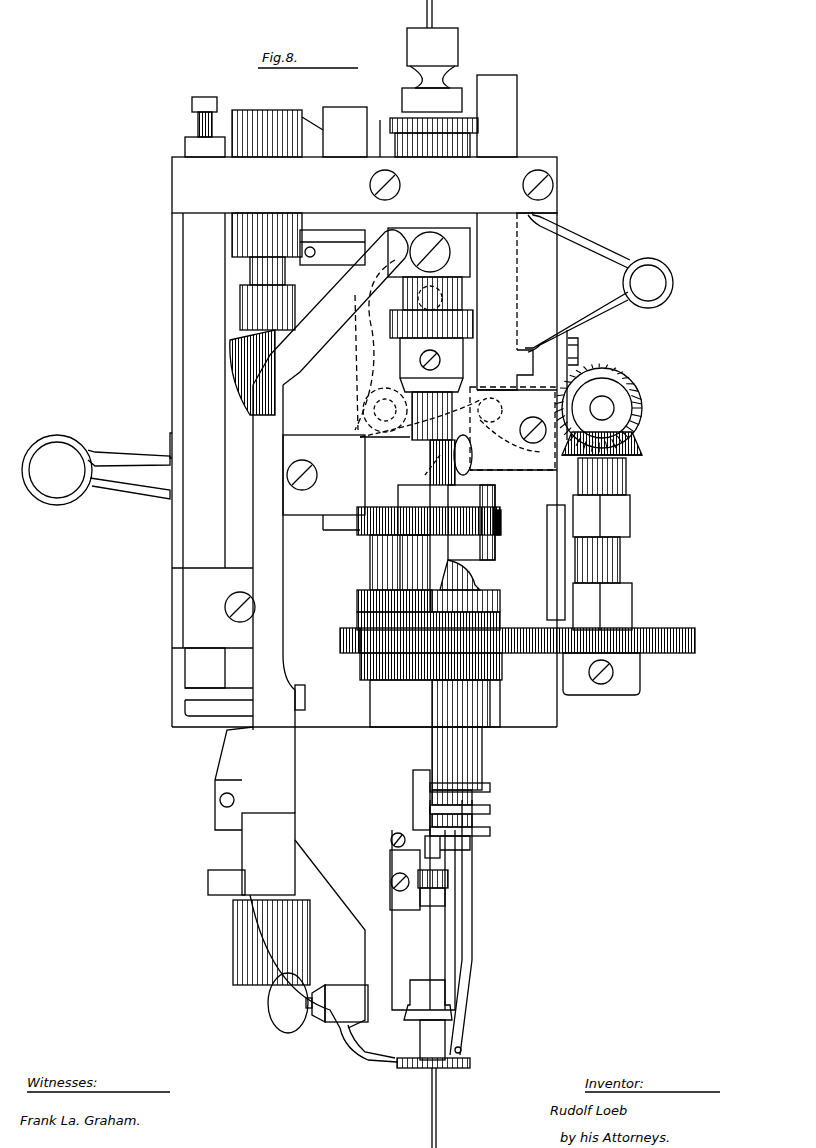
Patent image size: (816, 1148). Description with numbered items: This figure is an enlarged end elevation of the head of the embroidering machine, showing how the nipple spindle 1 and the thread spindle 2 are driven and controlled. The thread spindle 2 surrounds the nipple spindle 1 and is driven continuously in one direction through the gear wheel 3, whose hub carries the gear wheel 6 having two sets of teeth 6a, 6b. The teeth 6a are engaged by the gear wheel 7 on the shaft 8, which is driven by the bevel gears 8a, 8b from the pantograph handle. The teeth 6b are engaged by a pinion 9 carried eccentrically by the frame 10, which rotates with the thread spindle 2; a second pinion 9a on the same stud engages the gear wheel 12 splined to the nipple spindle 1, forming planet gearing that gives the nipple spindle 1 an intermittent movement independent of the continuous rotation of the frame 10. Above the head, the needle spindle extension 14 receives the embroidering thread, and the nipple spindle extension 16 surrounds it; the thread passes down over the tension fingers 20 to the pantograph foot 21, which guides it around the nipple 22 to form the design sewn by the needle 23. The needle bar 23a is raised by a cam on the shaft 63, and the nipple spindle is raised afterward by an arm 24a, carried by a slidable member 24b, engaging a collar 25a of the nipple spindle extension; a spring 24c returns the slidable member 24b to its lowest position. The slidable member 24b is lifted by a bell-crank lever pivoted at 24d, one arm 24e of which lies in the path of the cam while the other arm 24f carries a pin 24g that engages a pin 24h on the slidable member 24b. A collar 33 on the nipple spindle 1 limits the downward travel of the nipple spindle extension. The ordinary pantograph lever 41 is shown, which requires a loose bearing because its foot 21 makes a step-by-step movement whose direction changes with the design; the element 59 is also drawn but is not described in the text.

The nipple spindle 1 is at (422, 724).
The thread spindle 2 is at (470, 755).
The gear wheel 3 is at (500, 670).
The gear wheel 6 is at (505, 595).
The teeth of gear wheel 6 6a is at (341, 640).
The teeth of gear wheel 6 6b is at (358, 617).
The gear wheel 7 is at (695, 640).
The shaft 8 is at (630, 560).
The bevel gear 8a is at (640, 444).
The bevel gear 8b is at (642, 392).
The pinion 9 is at (360, 592).
The pinion 9a is at (362, 508).
The frame 10 is at (510, 550).
The gear wheel 12 is at (500, 520).
The needle spindle extension 14 is at (432, 92).
The nipple spindle extension 16 is at (371, 270).
The fingers 20 is at (492, 787).
The pantograph foot 21 is at (470, 1063).
The nipple 22 is at (428, 1048).
The needle 23 is at (445, 1108).
The needle bar 23a is at (435, 15).
The arm 24a is at (478, 137).
The slidable member 24b is at (505, 262).
The spring 24c is at (599, 282).
The pivot of bell-crank lever 24d is at (370, 440).
The arm of bell-crank lever 24e is at (356, 345).
The arm of bell-crank lever 24f is at (432, 465).
The pin 24g is at (513, 439).
The pin 24h is at (500, 402).
The collar 25a is at (386, 118).
The collar 33 is at (431, 389).
The pantograph lever 41 is at (308, 631).
The roller 59 is at (473, 452).
The shaft 63 is at (463, 300).